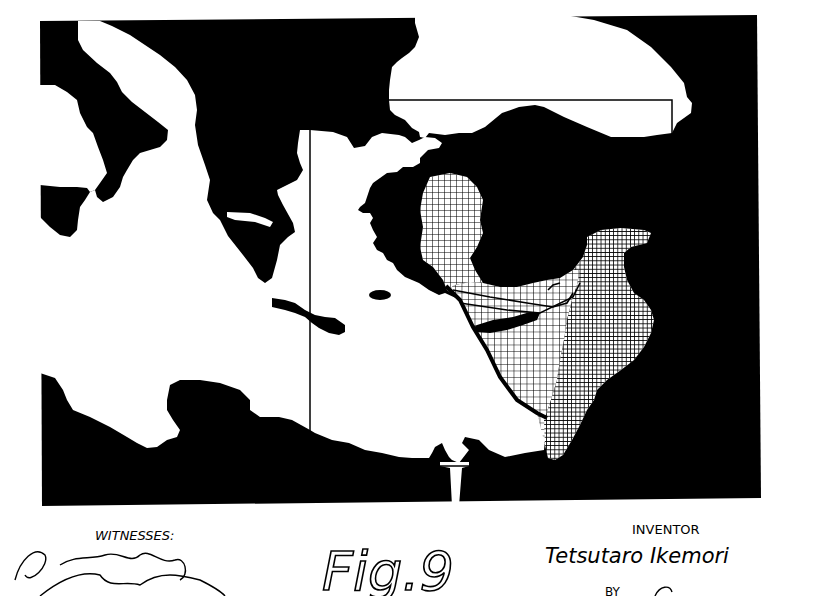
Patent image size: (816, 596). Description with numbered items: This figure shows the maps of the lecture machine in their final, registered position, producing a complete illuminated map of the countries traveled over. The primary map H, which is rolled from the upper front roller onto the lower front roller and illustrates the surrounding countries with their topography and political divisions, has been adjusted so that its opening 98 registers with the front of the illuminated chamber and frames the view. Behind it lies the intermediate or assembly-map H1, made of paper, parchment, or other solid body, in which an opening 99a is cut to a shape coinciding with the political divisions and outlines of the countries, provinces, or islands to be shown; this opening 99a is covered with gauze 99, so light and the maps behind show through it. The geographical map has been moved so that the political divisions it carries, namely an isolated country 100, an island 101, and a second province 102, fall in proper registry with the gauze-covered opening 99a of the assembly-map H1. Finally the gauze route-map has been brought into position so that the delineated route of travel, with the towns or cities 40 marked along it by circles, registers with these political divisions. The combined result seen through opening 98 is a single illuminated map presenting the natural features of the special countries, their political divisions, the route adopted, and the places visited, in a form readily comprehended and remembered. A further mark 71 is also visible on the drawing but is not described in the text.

The opening 98 is at (429, 100).
The gauze 99 is at (513, 357).
The gauze-covered opening 99a is at (500, 380).
The isolated country 100 is at (599, 344).
The island 101 is at (472, 331).
The second province 102 is at (451, 231).
The towns or cities 40 is at (545, 318).
The line 71 is at (557, 292).
The primary map H is at (150, 297).
The assembly-map H1 is at (540, 76).